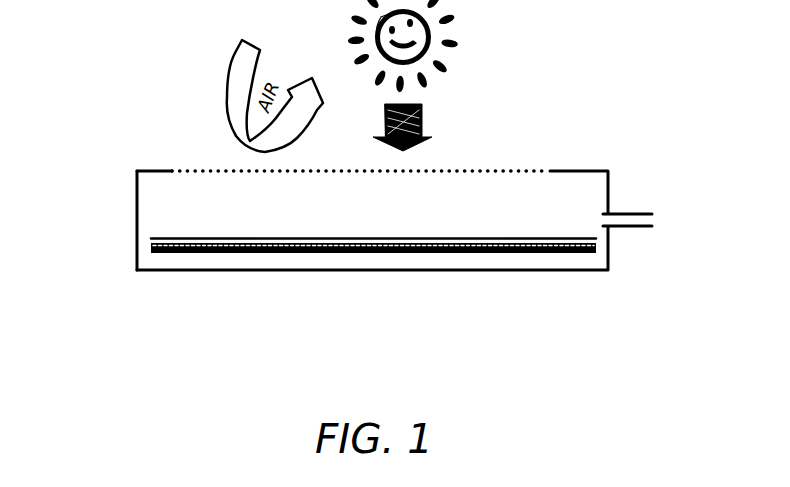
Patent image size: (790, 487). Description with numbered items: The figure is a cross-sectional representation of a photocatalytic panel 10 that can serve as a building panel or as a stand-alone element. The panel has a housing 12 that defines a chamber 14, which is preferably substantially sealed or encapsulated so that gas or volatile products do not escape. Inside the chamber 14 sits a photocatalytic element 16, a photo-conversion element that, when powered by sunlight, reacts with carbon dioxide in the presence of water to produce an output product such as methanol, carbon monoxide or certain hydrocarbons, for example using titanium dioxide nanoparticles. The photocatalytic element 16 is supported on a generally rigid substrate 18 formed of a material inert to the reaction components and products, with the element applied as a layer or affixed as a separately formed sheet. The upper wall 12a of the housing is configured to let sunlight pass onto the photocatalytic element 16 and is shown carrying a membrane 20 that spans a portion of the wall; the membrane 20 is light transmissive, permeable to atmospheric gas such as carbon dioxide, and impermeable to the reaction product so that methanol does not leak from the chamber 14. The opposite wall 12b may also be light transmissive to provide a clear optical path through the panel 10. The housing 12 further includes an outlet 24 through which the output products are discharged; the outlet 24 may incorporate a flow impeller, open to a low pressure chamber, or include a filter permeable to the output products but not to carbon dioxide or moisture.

The photocatalytic panel 10 is at (358, 223).
The housing 12 is at (137, 222).
The wall 12a is at (581, 169).
The opposite wall 12b is at (581, 272).
The chamber 14 is at (507, 217).
The photocatalytic element 16 is at (275, 239).
The substrate 18 is at (382, 254).
The membrane 20 is at (505, 169).
The outlet 24 is at (633, 213).